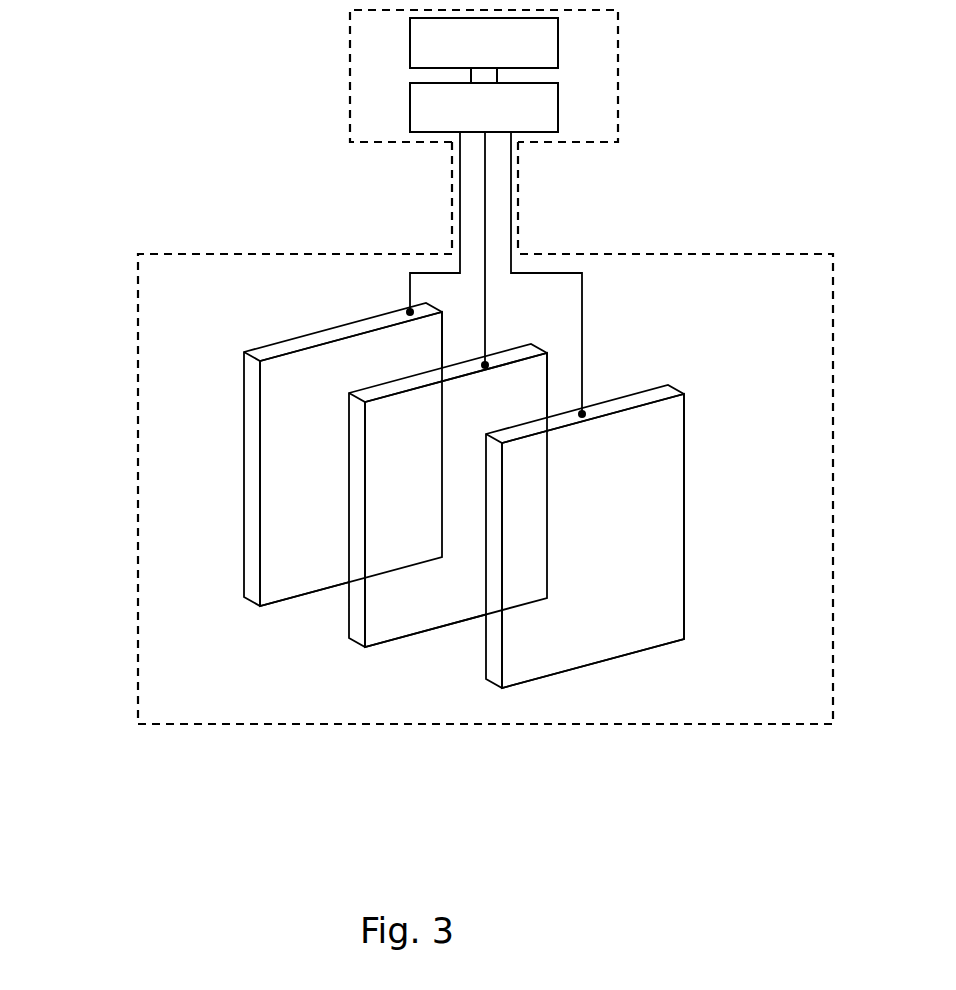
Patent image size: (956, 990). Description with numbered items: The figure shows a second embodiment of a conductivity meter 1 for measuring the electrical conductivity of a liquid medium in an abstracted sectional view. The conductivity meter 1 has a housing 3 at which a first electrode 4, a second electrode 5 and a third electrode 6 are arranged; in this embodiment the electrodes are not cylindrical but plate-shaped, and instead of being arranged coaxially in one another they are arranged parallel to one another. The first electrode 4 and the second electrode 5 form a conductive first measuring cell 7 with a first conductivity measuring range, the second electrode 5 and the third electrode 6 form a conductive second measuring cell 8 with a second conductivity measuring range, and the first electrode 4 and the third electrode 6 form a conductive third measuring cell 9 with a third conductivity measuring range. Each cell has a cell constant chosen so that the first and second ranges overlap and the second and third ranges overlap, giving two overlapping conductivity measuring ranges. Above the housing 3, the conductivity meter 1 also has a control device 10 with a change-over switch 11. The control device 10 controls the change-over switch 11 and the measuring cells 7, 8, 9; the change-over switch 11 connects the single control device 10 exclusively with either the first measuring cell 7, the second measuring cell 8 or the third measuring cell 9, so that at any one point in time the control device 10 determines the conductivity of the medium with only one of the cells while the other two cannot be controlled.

The conductivity meter 1 is at (745, 100).
The housing 3 is at (650, 698).
The first electrode 4 is at (260, 590).
The second electrode 5 is at (357, 620).
The third electrode 6 is at (495, 673).
The first measuring cell 7 is at (293, 424).
The second measuring cell 8 is at (410, 493).
The third measuring cell 9 is at (642, 353).
The control device 10 is at (452, 54).
The change-over switch 11 is at (448, 121).